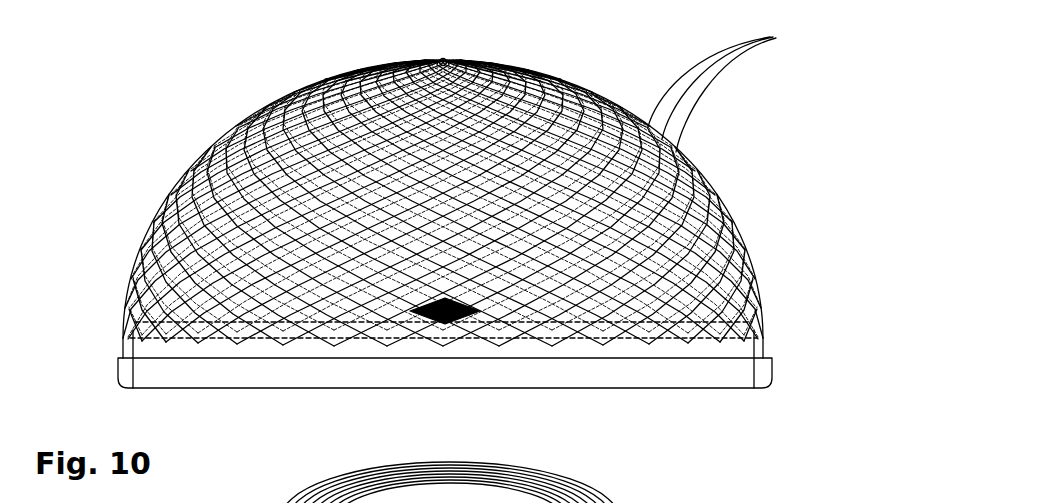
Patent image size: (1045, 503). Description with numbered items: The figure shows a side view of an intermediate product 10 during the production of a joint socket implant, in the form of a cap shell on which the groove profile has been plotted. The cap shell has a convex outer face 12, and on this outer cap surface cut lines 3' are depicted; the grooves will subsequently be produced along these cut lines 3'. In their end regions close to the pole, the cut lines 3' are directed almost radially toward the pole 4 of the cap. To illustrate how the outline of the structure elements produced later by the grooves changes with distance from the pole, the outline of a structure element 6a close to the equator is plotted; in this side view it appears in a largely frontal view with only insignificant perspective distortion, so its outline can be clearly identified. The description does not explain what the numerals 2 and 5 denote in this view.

The intermediate product 10 is at (152, 183).
The convex outer face 12 is at (248, 122).
The braided mesh 2 is at (192, 228).
The pole 4 is at (441, 54).
The cut lines 3' is at (729, 89).
The base ring 5 is at (185, 394).
The structure element close to the equator 6a is at (455, 322).